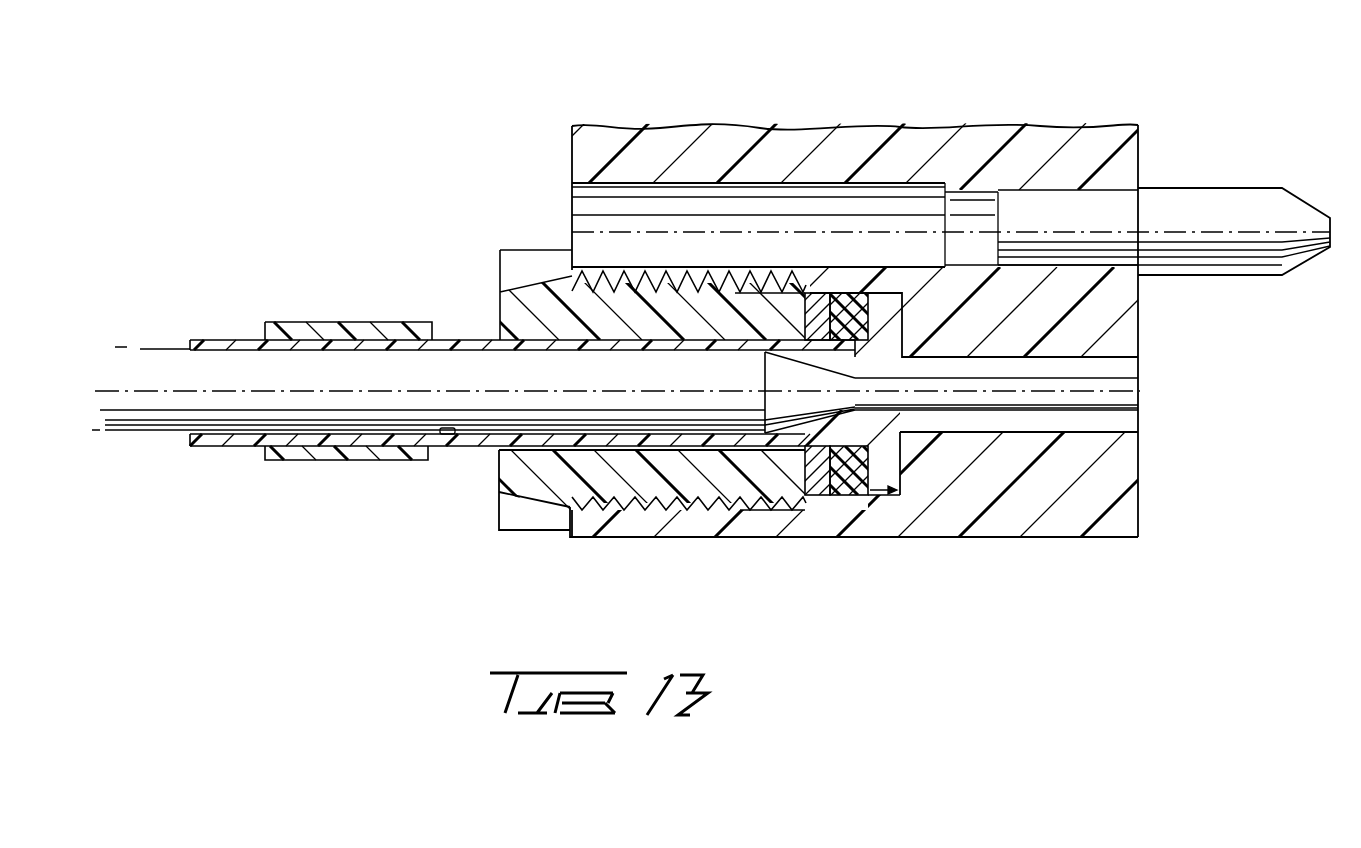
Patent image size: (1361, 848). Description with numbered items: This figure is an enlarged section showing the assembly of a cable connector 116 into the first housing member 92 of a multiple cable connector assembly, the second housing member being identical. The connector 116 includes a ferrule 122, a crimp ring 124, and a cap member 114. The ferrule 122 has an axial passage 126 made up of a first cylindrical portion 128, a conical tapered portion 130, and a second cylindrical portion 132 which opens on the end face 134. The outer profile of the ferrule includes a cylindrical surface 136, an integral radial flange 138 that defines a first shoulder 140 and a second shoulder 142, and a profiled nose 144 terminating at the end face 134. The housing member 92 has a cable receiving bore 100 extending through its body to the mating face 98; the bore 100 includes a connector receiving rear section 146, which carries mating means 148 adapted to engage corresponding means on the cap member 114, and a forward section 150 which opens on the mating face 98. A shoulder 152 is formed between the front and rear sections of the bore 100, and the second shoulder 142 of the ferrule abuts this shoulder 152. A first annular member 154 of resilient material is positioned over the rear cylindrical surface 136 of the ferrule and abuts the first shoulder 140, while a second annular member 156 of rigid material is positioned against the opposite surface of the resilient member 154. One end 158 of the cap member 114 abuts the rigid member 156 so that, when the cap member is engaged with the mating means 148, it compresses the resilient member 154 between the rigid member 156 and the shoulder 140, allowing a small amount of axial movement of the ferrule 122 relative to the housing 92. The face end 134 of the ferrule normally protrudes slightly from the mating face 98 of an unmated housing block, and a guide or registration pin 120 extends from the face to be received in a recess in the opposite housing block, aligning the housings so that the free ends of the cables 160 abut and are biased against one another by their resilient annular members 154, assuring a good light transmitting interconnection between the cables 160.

The first housing member 92 is at (1025, 105).
The mating face 98 is at (1140, 160).
The cable receiving bore 100 is at (1145, 432).
The cap member 114 is at (500, 250).
The cable connector 116 is at (500, 333).
The guide or registration pin 120 is at (1238, 190).
The ferrule 122 is at (187, 342).
The crimp ring 124 is at (280, 324).
The axial passage 126 is at (328, 384).
The first cylindrical portion 128 is at (445, 436).
The conical tapered portion 130 is at (810, 420).
The second cylindrical portion 132 is at (972, 412).
The end face 134 is at (1140, 422).
The cylindrical surface 136 is at (440, 338).
The integral radial flange 138 is at (930, 505).
The first shoulder 140 is at (857, 497).
The second shoulder 142 is at (912, 462).
The profiled nose 144 is at (1140, 360).
The connector receiving rear section 146 is at (810, 498).
The mating means 148 is at (660, 512).
The forward section 150 is at (1050, 438).
The shoulder 152 is at (900, 443).
The first annular member 154 is at (862, 296).
The second annular member 156 is at (805, 292).
The end of cap member 158 is at (790, 520).
The cables 160 is at (167, 422).